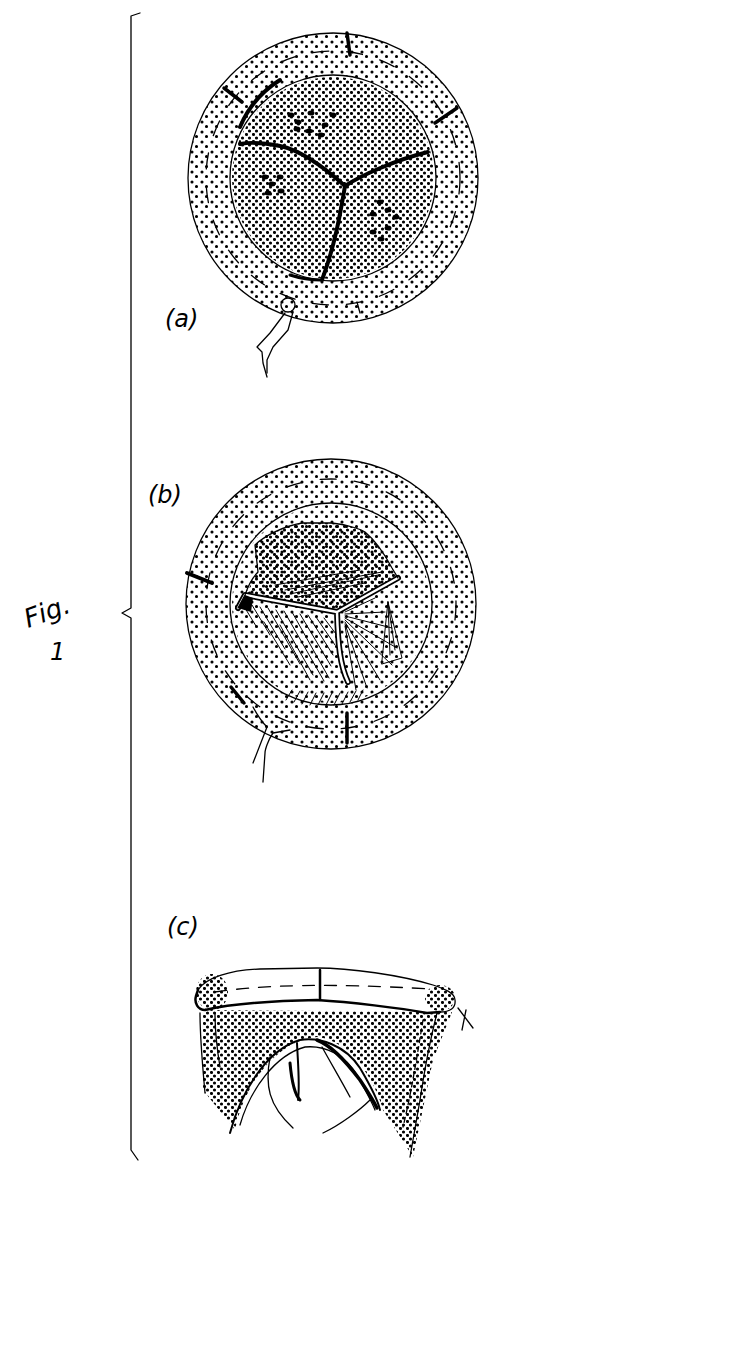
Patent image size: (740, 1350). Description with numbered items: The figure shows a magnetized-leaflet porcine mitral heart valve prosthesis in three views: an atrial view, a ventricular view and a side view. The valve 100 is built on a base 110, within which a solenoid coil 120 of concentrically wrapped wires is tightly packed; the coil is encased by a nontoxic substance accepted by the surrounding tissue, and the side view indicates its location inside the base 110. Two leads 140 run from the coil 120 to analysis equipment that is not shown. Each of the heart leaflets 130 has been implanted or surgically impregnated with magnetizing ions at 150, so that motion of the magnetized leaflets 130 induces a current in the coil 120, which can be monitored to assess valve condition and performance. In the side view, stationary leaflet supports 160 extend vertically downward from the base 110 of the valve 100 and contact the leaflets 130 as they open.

The valve 100 is at (438, 302).
The base 110 is at (437, 98).
The solenoid coil 120 is at (363, 323).
The heart leaflets 130 is at (323, 117).
The leads 140 is at (478, 1065).
The magnetizing ions 150 is at (293, 97).
The stationary leaflet supports 160 is at (220, 1093).